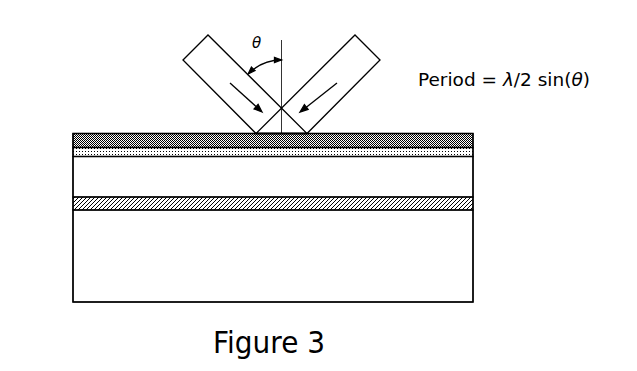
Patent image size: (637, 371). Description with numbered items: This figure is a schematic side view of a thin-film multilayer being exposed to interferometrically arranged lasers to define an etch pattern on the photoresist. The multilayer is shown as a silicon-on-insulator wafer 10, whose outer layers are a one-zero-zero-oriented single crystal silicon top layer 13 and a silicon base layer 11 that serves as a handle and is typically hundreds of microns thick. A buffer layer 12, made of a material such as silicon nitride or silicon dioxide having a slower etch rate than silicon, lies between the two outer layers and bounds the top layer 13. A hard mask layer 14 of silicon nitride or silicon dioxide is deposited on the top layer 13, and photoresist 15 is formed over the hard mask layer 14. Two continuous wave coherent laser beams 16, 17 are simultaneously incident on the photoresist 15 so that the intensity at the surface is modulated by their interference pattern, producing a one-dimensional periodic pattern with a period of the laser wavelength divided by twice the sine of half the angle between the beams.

The SOI wafer 10 is at (475, 158).
The silicon base layer 11 is at (73, 257).
The buffer layer 12 is at (73, 203).
The single crystal silicon top layer 13 is at (73, 175).
The hard mask layer 14 is at (473, 155).
The photoresist 15 is at (473, 143).
The laser beam 16 is at (195, 48).
The laser beam 17 is at (366, 46).